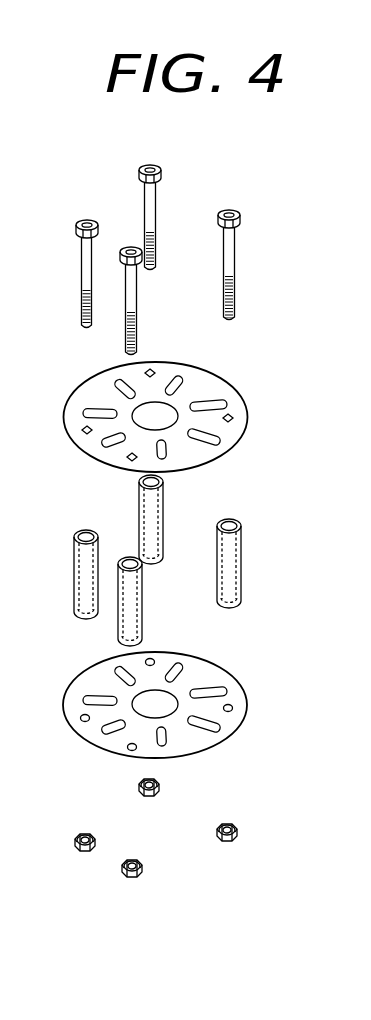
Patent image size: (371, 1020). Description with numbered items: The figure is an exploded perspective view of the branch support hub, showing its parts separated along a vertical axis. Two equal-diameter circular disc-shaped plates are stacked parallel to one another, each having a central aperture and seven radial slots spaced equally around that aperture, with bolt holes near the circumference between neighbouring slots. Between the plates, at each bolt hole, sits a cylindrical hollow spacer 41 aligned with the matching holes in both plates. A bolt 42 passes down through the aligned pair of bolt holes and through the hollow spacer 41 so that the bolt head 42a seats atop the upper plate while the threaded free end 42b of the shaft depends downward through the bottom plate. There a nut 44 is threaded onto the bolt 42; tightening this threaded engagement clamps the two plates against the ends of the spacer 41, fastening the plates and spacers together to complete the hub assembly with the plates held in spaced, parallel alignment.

The cylindrical hollow spacer 41 is at (231, 568).
The bolt 42 is at (214, 248).
The bolt head 42a is at (224, 211).
The threaded free end of bolt shaft 42b is at (227, 322).
The nut 44 is at (238, 840).